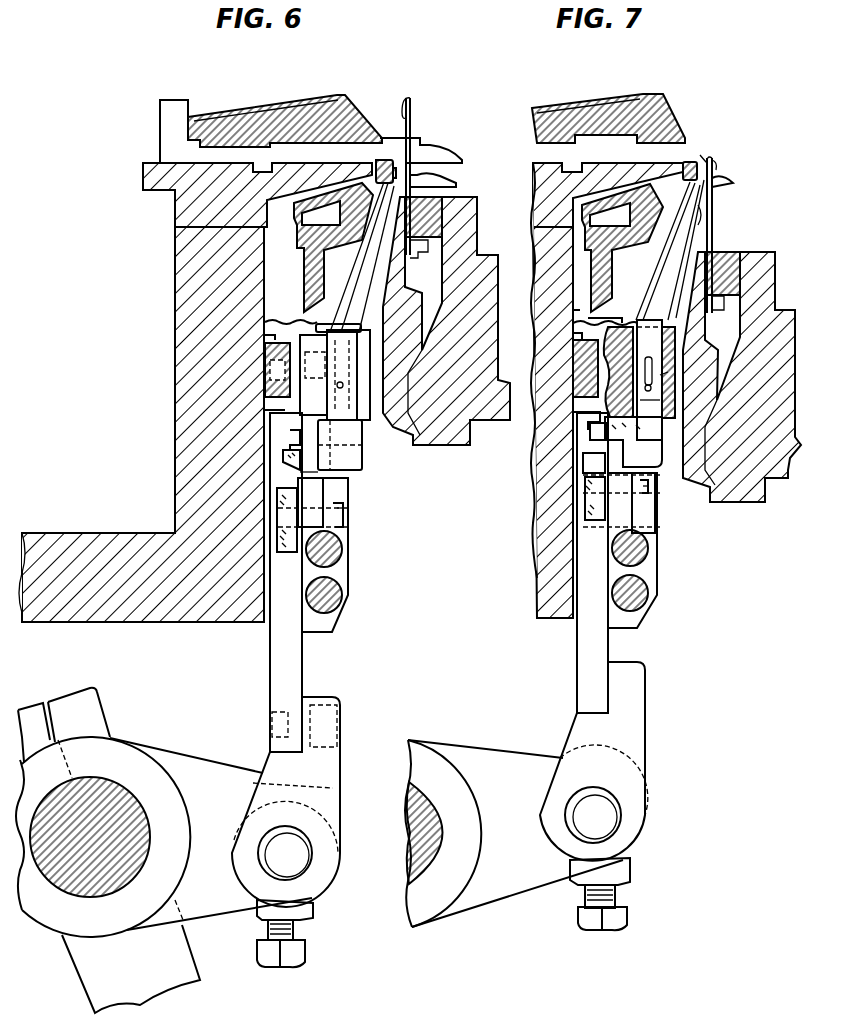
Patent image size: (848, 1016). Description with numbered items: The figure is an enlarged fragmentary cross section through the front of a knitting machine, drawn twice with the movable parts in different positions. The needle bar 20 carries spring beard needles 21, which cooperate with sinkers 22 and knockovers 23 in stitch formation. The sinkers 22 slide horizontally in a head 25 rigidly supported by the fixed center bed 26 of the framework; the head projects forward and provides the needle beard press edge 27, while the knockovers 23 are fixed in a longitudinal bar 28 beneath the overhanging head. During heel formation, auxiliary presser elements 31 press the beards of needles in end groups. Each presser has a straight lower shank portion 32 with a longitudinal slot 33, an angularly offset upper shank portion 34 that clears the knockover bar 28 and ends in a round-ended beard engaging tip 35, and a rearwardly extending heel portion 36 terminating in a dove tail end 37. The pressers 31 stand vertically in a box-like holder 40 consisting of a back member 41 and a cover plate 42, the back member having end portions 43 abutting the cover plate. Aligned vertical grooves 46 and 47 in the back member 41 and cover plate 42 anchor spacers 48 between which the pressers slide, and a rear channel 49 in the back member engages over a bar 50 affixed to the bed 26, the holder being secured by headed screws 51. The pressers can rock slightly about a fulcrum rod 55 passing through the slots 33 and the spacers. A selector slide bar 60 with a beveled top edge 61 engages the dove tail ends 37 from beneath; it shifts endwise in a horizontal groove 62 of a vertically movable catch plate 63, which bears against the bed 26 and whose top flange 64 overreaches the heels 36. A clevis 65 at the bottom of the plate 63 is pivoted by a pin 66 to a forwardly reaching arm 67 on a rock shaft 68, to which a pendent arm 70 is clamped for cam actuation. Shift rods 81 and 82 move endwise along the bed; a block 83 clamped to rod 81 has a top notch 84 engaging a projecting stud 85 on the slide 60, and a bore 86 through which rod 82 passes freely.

In FIG. 6, the needle bar 20 is at (455, 448).
In FIG. 7, the needle bar 20 is at (760, 502).
In FIG. 6, the spring beard needles 21 is at (412, 108).
In FIG. 7, the spring beard needles 21 is at (716, 224).
In FIG. 6, the sinkers 22 is at (445, 152).
In FIG. 7, the sinkers 22 is at (705, 155).
In FIG. 6, the knockovers 23 is at (450, 184).
In FIG. 7, the knockovers 23 is at (735, 184).
In FIG. 6, the sinker head 25 is at (176, 208).
In FIG. 7, the sinker head 25 is at (534, 202).
In FIG. 6, the center bed 26 is at (178, 268).
In FIG. 7, the center bed 26 is at (540, 570).
In FIG. 6, the needle beard press edge 27 is at (387, 161).
In FIG. 7, the needle beard press edge 27 is at (692, 161).
In FIG. 6, the knockover bar 28 is at (306, 243).
In FIG. 7, the knockover bar 28 is at (622, 248).
In FIG. 6, the auxiliary presser elements 31 is at (345, 256).
In FIG. 7, the auxiliary presser elements 31 is at (642, 292).
In FIG. 7, the lower shank portion 32 is at (653, 388).
In FIG. 6, the slot 33 is at (340, 445).
In FIG. 7, the slot 33 is at (649, 380).
In FIG. 7, the upper shank portion 34 is at (689, 250).
In FIG. 7, the needle beard engaging tip 35 is at (714, 160).
In FIG. 7, the heel portion 36 is at (633, 442).
In FIG. 6, the dove tail end 37 is at (283, 462).
In FIG. 7, the dove tail end 37 is at (590, 433).
In FIG. 6, the holder 40 is at (290, 320).
In FIG. 7, the holder 40 is at (610, 321).
In FIG. 6, the back member 41 is at (270, 408).
In FIG. 7, the back member 41 is at (573, 308).
In FIG. 6, the cover plate 42 is at (362, 330).
In FIG. 7, the cover plate 42 is at (668, 326).
In FIG. 6, the end portions 43 is at (337, 328).
In FIG. 7, the vertical grooves 46 is at (621, 382).
In FIG. 7, the vertical grooves 47 is at (670, 372).
In FIG. 6, the spacers 48 is at (362, 465).
In FIG. 7, the spacers 48 is at (656, 480).
In FIG. 6, the longitudinal channel 49 is at (269, 339).
In FIG. 7, the longitudinal channel 49 is at (578, 334).
In FIG. 6, the longitudinal bar 50 is at (268, 352).
In FIG. 7, the longitudinal bar 50 is at (580, 355).
In FIG. 6, the headed screws 51 is at (300, 392).
In FIG. 6, the fulcrum rod 55 is at (342, 375).
In FIG. 7, the fulcrum rod 55 is at (649, 410).
In FIG. 6, the selector slide bar 60 is at (279, 500).
In FIG. 7, the selector slide bar 60 is at (585, 478).
In FIG. 6, the beveled top edge 61 is at (310, 502).
In FIG. 7, the beveled top edge 61 is at (584, 456).
In FIG. 6, the horizontal groove 62 is at (273, 543).
In FIG. 7, the horizontal groove 62 is at (579, 502).
In FIG. 6, the catch plate 63 is at (292, 668).
In FIG. 7, the catch plate 63 is at (583, 538).
In FIG. 6, the flange 64 is at (300, 444).
In FIG. 7, the flange 64 is at (575, 416).
In FIG. 6, the clevis 65 is at (332, 803).
In FIG. 7, the clevis 65 is at (648, 741).
In FIG. 6, the pin 66 is at (285, 853).
In FIG. 7, the pin 66 is at (593, 815).
In FIG. 6, the forwardly reaching arm 67 is at (220, 774).
In FIG. 7, the forwardly reaching arm 67 is at (513, 757).
In FIG. 6, the rock shaft 68 is at (92, 777).
In FIG. 7, the rock shaft 68 is at (413, 833).
In FIG. 6, the pendent arm 70 is at (131, 969).
In FIG. 6, the shift rod 81 is at (332, 549).
In FIG. 7, the shift rod 81 is at (640, 548).
In FIG. 6, the shift rod 82 is at (346, 605).
In FIG. 7, the shift rod 82 is at (655, 600).
In FIG. 6, the block 83 is at (347, 566).
In FIG. 7, the block 83 is at (655, 570).
In FIG. 6, the notch 84 is at (346, 522).
In FIG. 7, the notch 84 is at (650, 524).
In FIG. 6, the stud 85 is at (345, 503).
In FIG. 7, the stud 85 is at (652, 500).
In FIG. 6, the bore 86 is at (336, 596).
In FIG. 7, the bore 86 is at (640, 610).